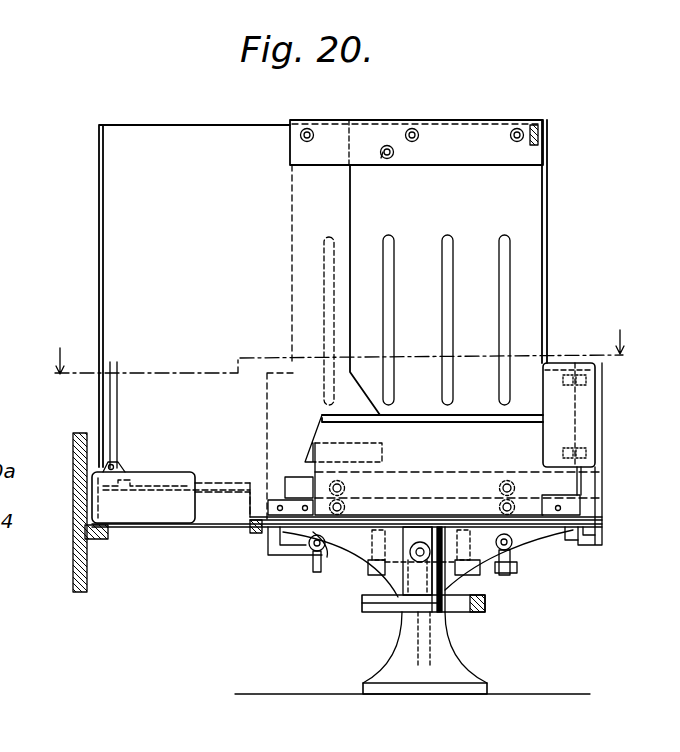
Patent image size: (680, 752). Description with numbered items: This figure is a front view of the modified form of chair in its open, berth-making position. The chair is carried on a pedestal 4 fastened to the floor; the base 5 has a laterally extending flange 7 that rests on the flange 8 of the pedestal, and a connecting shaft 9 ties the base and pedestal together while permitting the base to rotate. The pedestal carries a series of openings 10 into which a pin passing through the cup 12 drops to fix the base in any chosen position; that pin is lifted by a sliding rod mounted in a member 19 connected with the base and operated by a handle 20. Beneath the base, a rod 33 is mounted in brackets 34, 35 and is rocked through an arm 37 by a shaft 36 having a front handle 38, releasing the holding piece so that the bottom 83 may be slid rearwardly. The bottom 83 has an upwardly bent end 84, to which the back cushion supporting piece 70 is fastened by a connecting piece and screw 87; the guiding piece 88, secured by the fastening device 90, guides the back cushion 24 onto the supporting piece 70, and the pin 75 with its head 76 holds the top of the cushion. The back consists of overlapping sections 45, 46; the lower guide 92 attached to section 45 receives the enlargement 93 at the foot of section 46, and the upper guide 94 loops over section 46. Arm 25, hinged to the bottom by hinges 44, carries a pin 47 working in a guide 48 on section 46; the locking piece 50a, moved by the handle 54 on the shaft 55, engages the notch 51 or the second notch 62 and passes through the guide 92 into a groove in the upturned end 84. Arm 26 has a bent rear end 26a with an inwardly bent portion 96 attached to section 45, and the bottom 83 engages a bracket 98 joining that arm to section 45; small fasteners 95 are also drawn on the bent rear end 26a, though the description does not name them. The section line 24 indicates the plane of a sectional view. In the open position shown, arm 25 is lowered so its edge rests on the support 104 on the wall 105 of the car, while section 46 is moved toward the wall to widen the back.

The pedestal 4 is at (410, 661).
The base 5 is at (350, 528).
The laterally extending flange 7 is at (479, 598).
The flange of the pedestal 8 is at (452, 610).
The connecting piece or shaft 9 is at (433, 655).
The openings 10 is at (416, 618).
The cup 12 is at (418, 578).
The member 19 is at (417, 540).
The handle 20 is at (424, 546).
The back cushion 24 is at (335, 361).
The arm 25 is at (160, 524).
The arm 26 is at (597, 413).
The rear end of arm 26a is at (590, 480).
The rod 33 is at (492, 565).
The bracket 34 is at (400, 556).
The bracket 35 is at (472, 570).
The shaft 36 is at (510, 548).
The arm 37 is at (508, 562).
The handle 38 is at (503, 576).
The hinges 44 is at (247, 519).
The back section 45 is at (455, 183).
The back section 46 is at (165, 125).
The pin 47 is at (113, 468).
The guide 48 is at (118, 392).
The locking piece 50a is at (336, 592).
The notch 51 is at (135, 486).
The handle 54 is at (313, 575).
The shaft 55 is at (314, 550).
The second notch 62 is at (306, 480).
The back cushion supporting piece 70 is at (440, 470).
The pin 75 is at (392, 158).
The head 76 is at (383, 158).
The bottom 83 is at (381, 517).
The upwardly bent end 84 is at (550, 498).
The screw 87 is at (341, 490).
The guiding piece 88 is at (472, 427).
The fastening device 90 is at (337, 481).
The lower guide 92 is at (290, 480).
The enlargement 93 is at (242, 486).
The upper guide 94 is at (432, 122).
The screw 95 is at (590, 381).
The inwardly bent portion 96 is at (548, 212).
The bracket 98 is at (256, 536).
The support 104 is at (97, 540).
The wall 105 is at (78, 566).